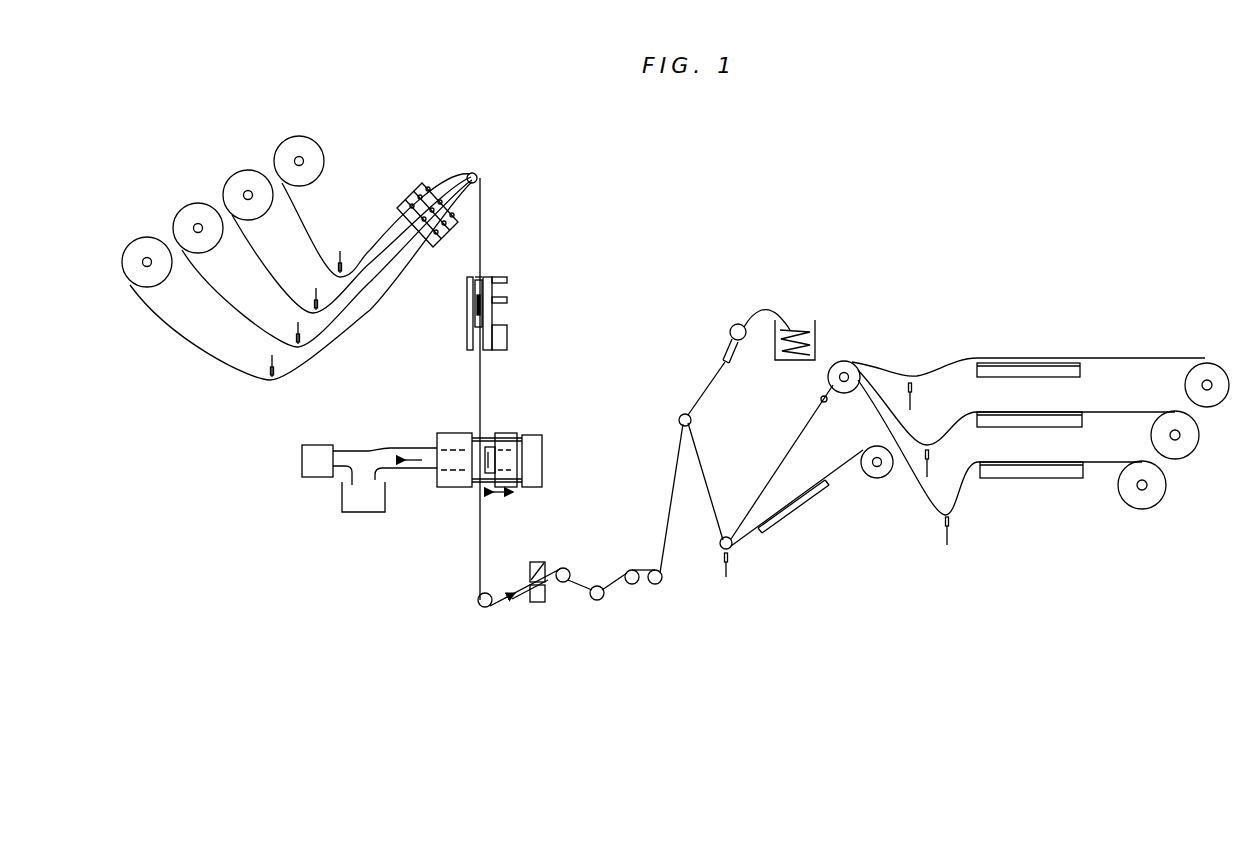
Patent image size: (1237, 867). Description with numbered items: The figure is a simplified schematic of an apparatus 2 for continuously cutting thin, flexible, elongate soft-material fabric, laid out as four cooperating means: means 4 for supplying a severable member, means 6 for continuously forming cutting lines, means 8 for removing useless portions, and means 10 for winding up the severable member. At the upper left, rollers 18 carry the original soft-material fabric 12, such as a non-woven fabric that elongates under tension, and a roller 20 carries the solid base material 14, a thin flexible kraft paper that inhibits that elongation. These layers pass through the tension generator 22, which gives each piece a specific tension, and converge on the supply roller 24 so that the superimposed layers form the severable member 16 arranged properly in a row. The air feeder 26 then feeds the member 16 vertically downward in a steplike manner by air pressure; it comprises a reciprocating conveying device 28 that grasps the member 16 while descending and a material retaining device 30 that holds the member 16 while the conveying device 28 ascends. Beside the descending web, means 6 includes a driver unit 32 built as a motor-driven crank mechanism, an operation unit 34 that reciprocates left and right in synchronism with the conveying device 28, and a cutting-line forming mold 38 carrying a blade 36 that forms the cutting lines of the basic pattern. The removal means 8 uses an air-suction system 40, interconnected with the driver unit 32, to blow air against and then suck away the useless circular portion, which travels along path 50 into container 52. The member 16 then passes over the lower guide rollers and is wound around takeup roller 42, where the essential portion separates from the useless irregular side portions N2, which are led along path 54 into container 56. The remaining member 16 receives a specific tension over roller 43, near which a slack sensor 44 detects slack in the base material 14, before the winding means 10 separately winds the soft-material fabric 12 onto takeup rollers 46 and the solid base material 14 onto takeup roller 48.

The apparatus 2 is at (930, 183).
The means for supplying a severable member 4 is at (460, 162).
The means for continuously forming cutting lines 6 is at (525, 451).
The means for removing useless portions 8 is at (630, 594).
The means for winding up the severable member 10 is at (972, 522).
The soft-material fabric 12 is at (303, 222).
The solid base material 14 is at (195, 340).
The severable member 16 is at (485, 195).
The rollers winding original soft-material fabric 18 is at (192, 203).
The rollers winding original solid base material 20 is at (146, 237).
The tension generator 22 is at (410, 193).
The supply roller 24 is at (478, 177).
The air feeder 26 is at (510, 268).
The reciprocating conveying device 28 is at (475, 312).
The material retaining device 30 is at (473, 280).
The driver unit 32 is at (545, 438).
The operation unit 34 is at (510, 432).
The blade 36 is at (497, 494).
The cutting-line forming mold 38 is at (490, 432).
The air-suction system 40 is at (318, 442).
The takeup roller 42 is at (680, 415).
The roller 43 is at (735, 548).
The slack sensor 44 is at (790, 512).
The soft-material takeup rollers 46 is at (1185, 385).
The solid base material takeup roller 48 is at (885, 477).
The path 50 is at (400, 448).
The container 52 is at (365, 512).
The path 54 is at (730, 362).
The container 56 is at (815, 325).
The useless irregular side portion N2 is at (705, 378).